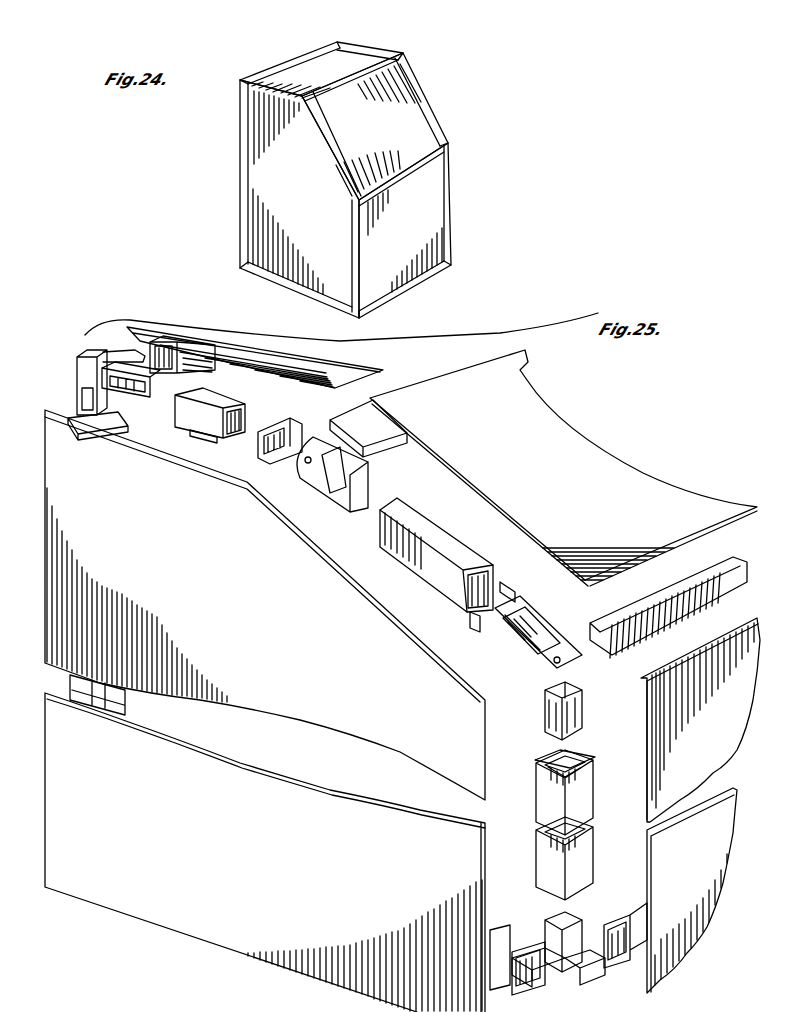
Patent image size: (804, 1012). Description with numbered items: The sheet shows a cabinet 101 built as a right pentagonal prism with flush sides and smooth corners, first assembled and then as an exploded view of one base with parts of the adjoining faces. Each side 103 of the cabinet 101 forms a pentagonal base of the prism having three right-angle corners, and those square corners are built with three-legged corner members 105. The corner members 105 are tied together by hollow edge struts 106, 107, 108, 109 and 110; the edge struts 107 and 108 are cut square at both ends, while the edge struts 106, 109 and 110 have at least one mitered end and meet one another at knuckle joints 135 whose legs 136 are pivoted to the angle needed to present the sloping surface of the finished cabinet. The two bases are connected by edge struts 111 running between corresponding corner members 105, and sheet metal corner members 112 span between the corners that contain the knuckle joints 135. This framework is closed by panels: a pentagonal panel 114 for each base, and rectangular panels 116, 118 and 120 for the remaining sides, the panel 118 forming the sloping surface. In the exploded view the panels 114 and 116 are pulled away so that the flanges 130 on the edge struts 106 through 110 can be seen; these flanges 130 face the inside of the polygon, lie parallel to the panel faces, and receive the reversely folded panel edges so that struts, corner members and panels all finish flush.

In FIG. 24, the cabinet 101 is at (195, 139).
In FIG. 24, the side 103 is at (237, 203).
In FIG. 24, the three-legged corner member 105 is at (241, 78).
In FIG. 25, the three-legged corner member 105 is at (75, 365).
In FIG. 25, the edge strut 106 is at (218, 392).
In FIG. 24, the edge strut 107 is at (238, 140).
In FIG. 25, the edge strut 107 is at (125, 408).
In FIG. 24, the edge strut 108 is at (266, 285).
In FIG. 25, the edge strut 108 is at (510, 983).
In FIG. 24, the edge strut 109 is at (378, 262).
In FIG. 25, the edge strut 109 is at (594, 789).
In FIG. 24, the edge strut 110 is at (322, 118).
In FIG. 25, the edge strut 110 is at (437, 505).
In FIG. 24, the edge strut 111 is at (276, 62).
In FIG. 25, the edge strut 111 is at (620, 918).
In FIG. 24, the sheet metal corner member 112 is at (403, 66).
In FIG. 25, the sheet metal corner member 112 is at (383, 440).
In FIG. 24, the pentagonal panel 114 is at (310, 199).
In FIG. 25, the pentagonal panel 114 is at (223, 633).
In FIG. 24, the rectangular panel 116 is at (422, 230).
In FIG. 25, the rectangular panel 116 is at (711, 725).
In FIG. 24, the rectangular panel (sloping surface) 118 is at (382, 121).
In FIG. 25, the rectangular panel (sloping surface) 118 is at (534, 428).
In FIG. 24, the rectangular panel 120 is at (302, 96).
In FIG. 25, the rectangular panel 120 is at (378, 370).
In FIG. 25, the flange 130 is at (112, 425).
In FIG. 25, the knuckle joint 135 is at (318, 480).
In FIG. 25, the leg 136 is at (266, 460).